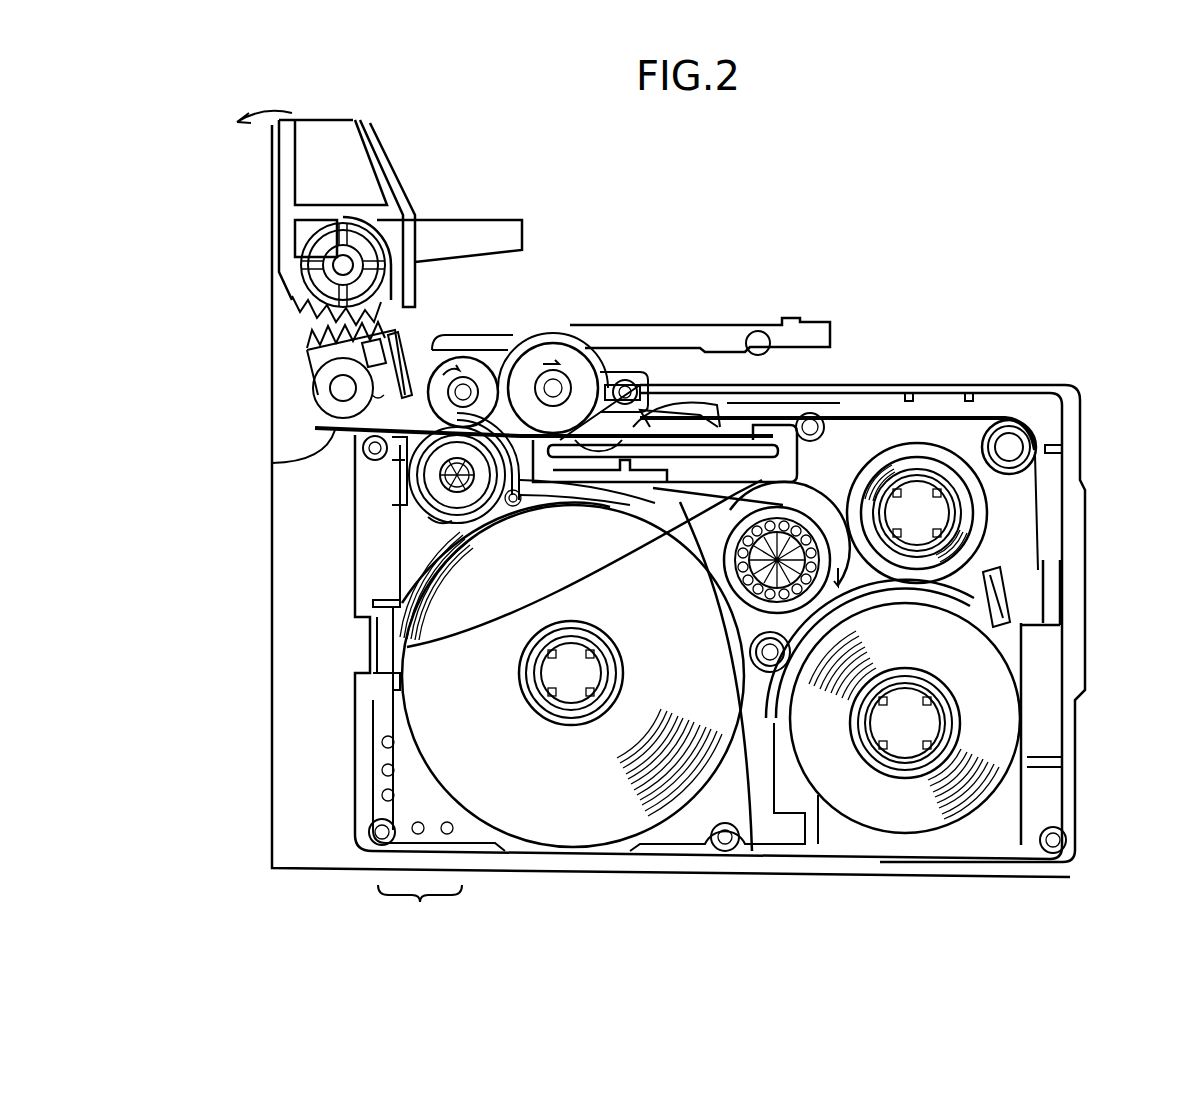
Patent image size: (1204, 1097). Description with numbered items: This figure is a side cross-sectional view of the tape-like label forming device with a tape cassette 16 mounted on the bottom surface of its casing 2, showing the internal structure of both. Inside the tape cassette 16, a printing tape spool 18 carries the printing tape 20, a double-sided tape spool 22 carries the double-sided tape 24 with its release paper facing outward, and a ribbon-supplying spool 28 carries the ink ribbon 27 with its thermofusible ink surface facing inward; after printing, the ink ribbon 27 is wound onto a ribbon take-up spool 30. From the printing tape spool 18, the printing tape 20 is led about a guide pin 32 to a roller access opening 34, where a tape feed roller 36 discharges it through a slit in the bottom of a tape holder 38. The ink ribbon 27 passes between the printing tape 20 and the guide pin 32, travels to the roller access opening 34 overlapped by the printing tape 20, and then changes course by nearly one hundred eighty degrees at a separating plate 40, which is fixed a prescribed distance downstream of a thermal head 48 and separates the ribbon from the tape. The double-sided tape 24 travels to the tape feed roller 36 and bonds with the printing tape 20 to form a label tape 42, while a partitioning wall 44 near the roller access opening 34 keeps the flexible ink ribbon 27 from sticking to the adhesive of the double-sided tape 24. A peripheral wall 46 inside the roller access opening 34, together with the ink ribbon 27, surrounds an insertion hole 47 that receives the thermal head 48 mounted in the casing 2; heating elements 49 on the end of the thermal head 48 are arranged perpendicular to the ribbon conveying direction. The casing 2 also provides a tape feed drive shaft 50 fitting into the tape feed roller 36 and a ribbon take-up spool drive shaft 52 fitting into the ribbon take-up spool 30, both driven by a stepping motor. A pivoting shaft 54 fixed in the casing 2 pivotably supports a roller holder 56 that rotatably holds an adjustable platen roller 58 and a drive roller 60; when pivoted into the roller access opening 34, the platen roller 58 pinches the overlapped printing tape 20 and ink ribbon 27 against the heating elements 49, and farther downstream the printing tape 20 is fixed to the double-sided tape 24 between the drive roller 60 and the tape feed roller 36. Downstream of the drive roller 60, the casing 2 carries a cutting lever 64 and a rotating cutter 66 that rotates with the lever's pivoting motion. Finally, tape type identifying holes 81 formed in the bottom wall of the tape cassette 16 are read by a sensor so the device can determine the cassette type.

The casing 2 is at (272, 402).
The tape cassette 16 is at (360, 770).
The printing tape spool 18 is at (923, 783).
The printing tape 20 is at (495, 432).
The double-sided tape spool 22 is at (570, 727).
The double-sided tape 24 is at (592, 827).
The ink ribbon 27 is at (407, 647).
The ribbon-supplying spool 28 is at (990, 508).
The ribbon take-up spool 30 is at (800, 512).
The guide pin 32 is at (1040, 433).
The roller access opening 34 is at (512, 432).
The tape feed roller 36 is at (410, 510).
The tape holder 38 is at (320, 428).
The separating plate 40 is at (548, 344).
The label tape 42 is at (272, 463).
The partitioning wall 44 is at (483, 578).
The peripheral wall 46 is at (822, 518).
The insertion hole 47 is at (683, 440).
The thermal head 48 is at (745, 440).
The heating elements 49 is at (667, 430).
The tape feed drive shaft 50 is at (447, 477).
The ribbon take-up spool drive shaft 52 is at (755, 607).
The pivoting shaft 54 is at (762, 332).
The roller holder 56 is at (628, 325).
The platen roller 58 is at (565, 333).
The drive roller 60 is at (475, 350).
The cutting lever 64 is at (390, 163).
The rotating cutter 66 is at (310, 370).
The tape type identifying holes 81 is at (420, 908).